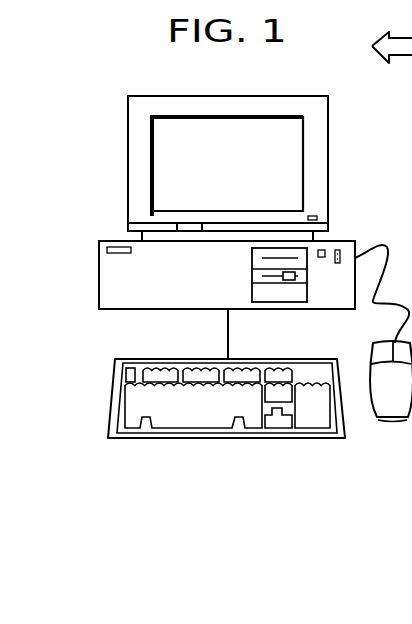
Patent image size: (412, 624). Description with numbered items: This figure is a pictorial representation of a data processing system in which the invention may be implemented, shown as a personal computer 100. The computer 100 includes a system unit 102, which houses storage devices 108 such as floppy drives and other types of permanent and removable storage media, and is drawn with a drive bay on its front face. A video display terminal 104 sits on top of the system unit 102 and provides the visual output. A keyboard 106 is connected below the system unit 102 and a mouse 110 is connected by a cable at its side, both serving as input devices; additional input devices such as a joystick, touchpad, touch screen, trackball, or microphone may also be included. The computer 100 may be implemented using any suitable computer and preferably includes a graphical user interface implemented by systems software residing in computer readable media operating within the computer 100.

The computer 100 is at (247, 78).
The system unit 102 is at (227, 300).
The video display terminal 104 is at (137, 90).
The keyboard 106 is at (248, 450).
The storage devices 108 is at (243, 279).
The mouse 110 is at (389, 430).